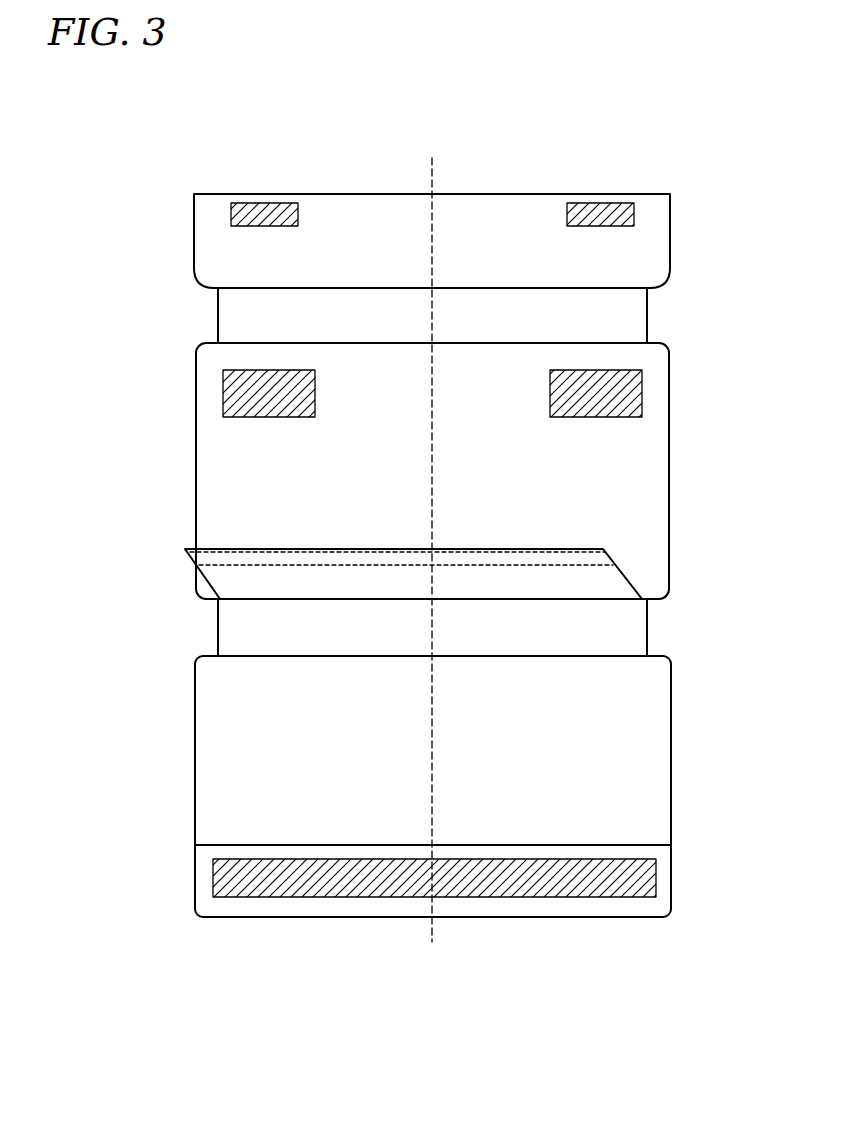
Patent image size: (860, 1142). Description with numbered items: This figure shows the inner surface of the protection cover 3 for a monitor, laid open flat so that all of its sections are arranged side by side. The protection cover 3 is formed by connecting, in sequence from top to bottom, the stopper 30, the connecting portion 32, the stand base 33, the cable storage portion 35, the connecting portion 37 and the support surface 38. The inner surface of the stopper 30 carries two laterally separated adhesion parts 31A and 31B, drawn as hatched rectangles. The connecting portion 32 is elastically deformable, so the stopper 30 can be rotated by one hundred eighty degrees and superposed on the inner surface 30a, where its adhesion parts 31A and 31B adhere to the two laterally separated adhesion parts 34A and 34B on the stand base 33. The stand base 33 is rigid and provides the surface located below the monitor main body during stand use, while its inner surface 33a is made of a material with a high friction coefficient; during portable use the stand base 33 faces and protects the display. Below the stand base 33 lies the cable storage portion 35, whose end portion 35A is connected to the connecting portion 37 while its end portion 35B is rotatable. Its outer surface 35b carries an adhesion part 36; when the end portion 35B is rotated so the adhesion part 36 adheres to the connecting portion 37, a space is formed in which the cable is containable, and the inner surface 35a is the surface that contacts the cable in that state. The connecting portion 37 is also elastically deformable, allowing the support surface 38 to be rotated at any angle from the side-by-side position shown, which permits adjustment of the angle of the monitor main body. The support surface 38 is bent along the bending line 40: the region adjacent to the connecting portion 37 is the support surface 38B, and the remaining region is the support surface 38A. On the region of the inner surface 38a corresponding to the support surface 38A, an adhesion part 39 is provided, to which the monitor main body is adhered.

The protection cover 3 is at (442, 104).
The stopper 30 is at (670, 231).
The inner surface 30a is at (222, 252).
The adhesion part 31A is at (263, 203).
The adhesion part 31B is at (602, 203).
The connecting portion 32 is at (647, 313).
The stand base 33 is at (669, 482).
The inner surface 33a is at (217, 465).
The adhesion part 34A is at (223, 393).
The adhesion part 34B is at (643, 392).
The cable storage portion 35 is at (628, 578).
The end portion 35A is at (255, 603).
The end portion 35B is at (222, 548).
The inner surface 35a is at (228, 589).
The outer surface 35b is at (201, 572).
The adhesion part 36 is at (598, 557).
The connecting portion 37 is at (647, 628).
The support surface 38 is at (433, 786).
The inner surface 38a is at (222, 761).
The support surface 38A is at (671, 878).
The support surface 38B is at (671, 756).
The adhesion part 39 is at (213, 877).
The bending line 40 is at (671, 845).